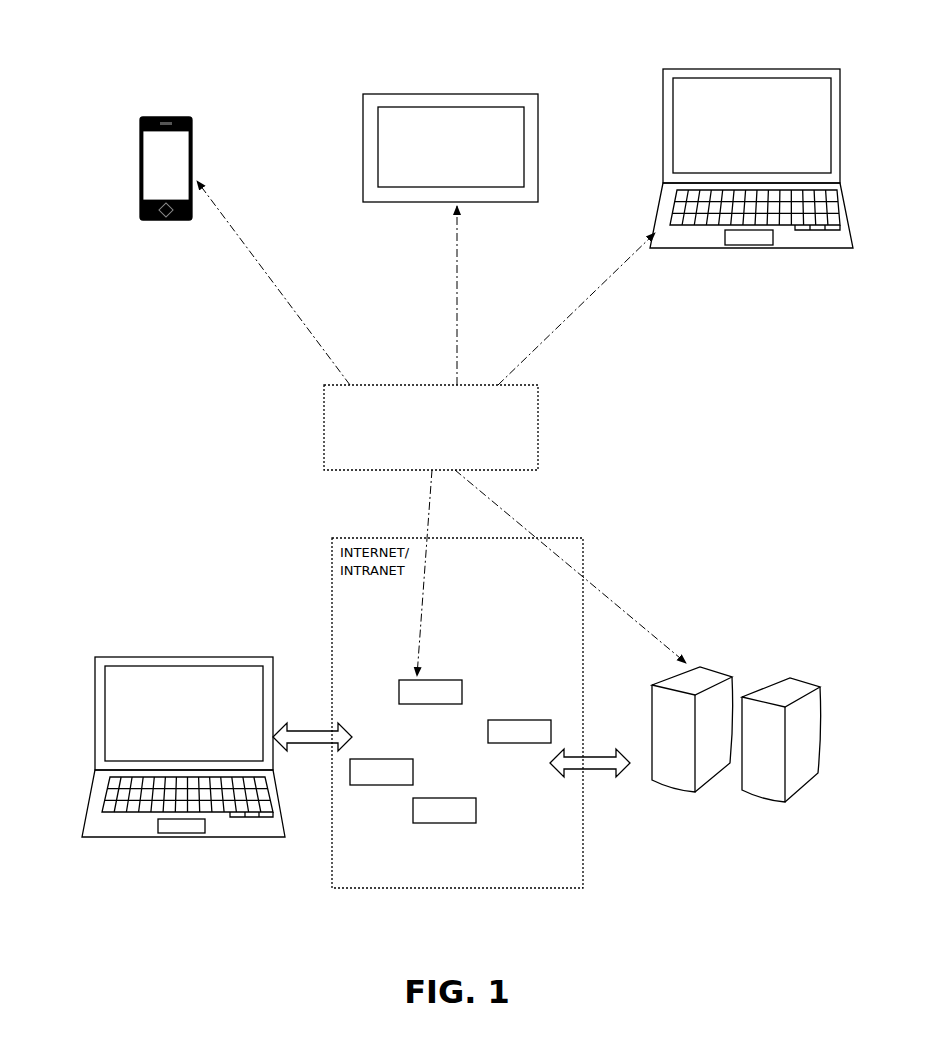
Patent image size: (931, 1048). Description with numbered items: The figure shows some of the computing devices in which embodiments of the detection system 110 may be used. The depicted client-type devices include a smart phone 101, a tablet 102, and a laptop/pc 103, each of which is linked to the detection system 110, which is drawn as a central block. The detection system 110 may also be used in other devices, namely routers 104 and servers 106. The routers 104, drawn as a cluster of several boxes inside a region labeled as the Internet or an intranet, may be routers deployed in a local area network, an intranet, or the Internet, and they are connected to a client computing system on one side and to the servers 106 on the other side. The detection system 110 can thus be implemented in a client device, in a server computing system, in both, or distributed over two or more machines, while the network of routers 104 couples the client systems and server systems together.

The smart phone 101 is at (126, 108).
The tablet 102 is at (356, 76).
The laptop/pc 103 is at (693, 51).
The router 104 is at (450, 751).
The server 106 is at (748, 613).
The detection system 110 is at (441, 428).